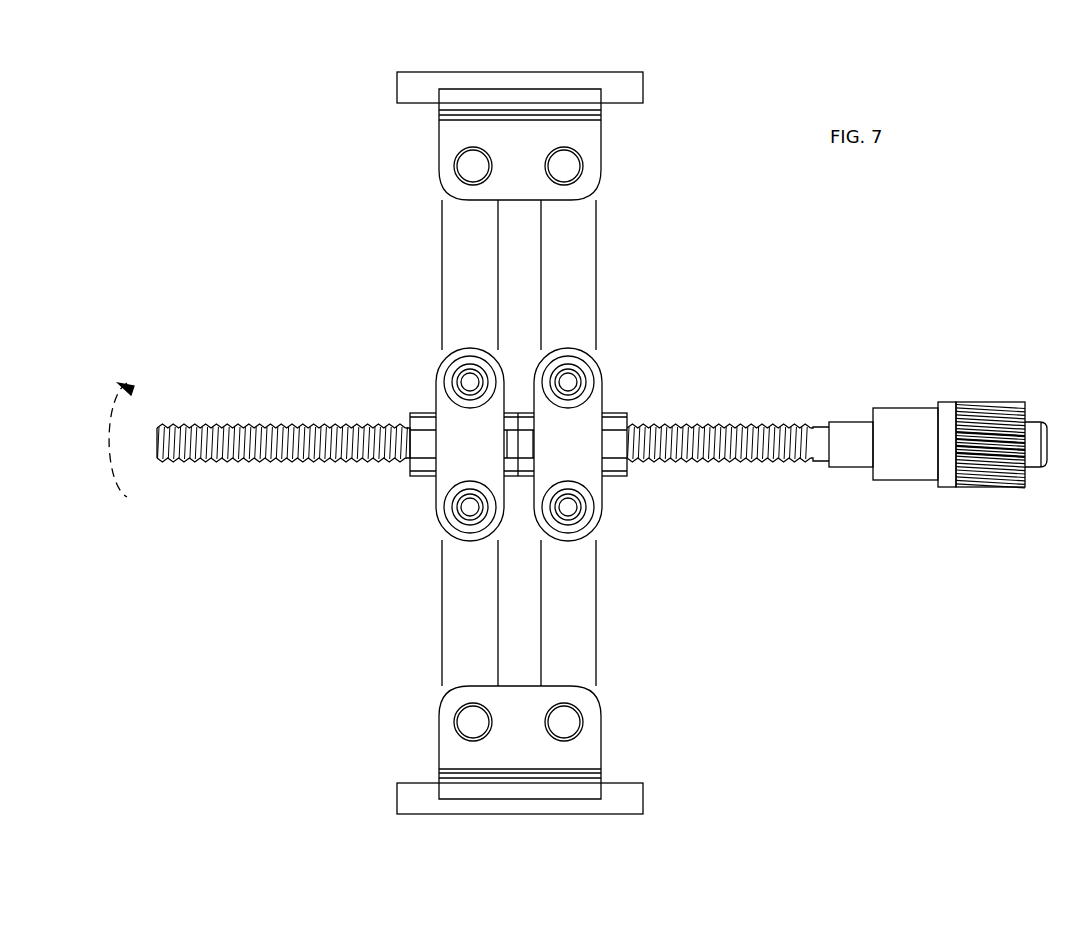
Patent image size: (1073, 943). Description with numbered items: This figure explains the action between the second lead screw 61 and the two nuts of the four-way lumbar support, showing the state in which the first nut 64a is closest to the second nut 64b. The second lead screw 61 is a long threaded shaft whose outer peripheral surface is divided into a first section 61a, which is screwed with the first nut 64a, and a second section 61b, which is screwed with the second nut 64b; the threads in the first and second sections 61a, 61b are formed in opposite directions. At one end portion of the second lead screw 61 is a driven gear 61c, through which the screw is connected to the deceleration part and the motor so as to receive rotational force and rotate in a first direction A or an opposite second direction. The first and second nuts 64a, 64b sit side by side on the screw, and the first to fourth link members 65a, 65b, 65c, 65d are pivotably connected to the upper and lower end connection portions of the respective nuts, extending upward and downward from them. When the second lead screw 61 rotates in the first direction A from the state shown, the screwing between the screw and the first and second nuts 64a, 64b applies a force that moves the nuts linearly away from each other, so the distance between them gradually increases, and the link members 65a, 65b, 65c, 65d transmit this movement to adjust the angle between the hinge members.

The second lead screw 61 is at (222, 410).
The first section 61a is at (222, 462).
The second section 61b is at (740, 466).
The driven gear 61c is at (992, 487).
The first nut 64a is at (423, 408).
The second nut 64b is at (617, 408).
The first link member 65a is at (448, 223).
The second link member 65b is at (448, 663).
The third link member 65c is at (592, 223).
The fourth link member 65d is at (592, 663).